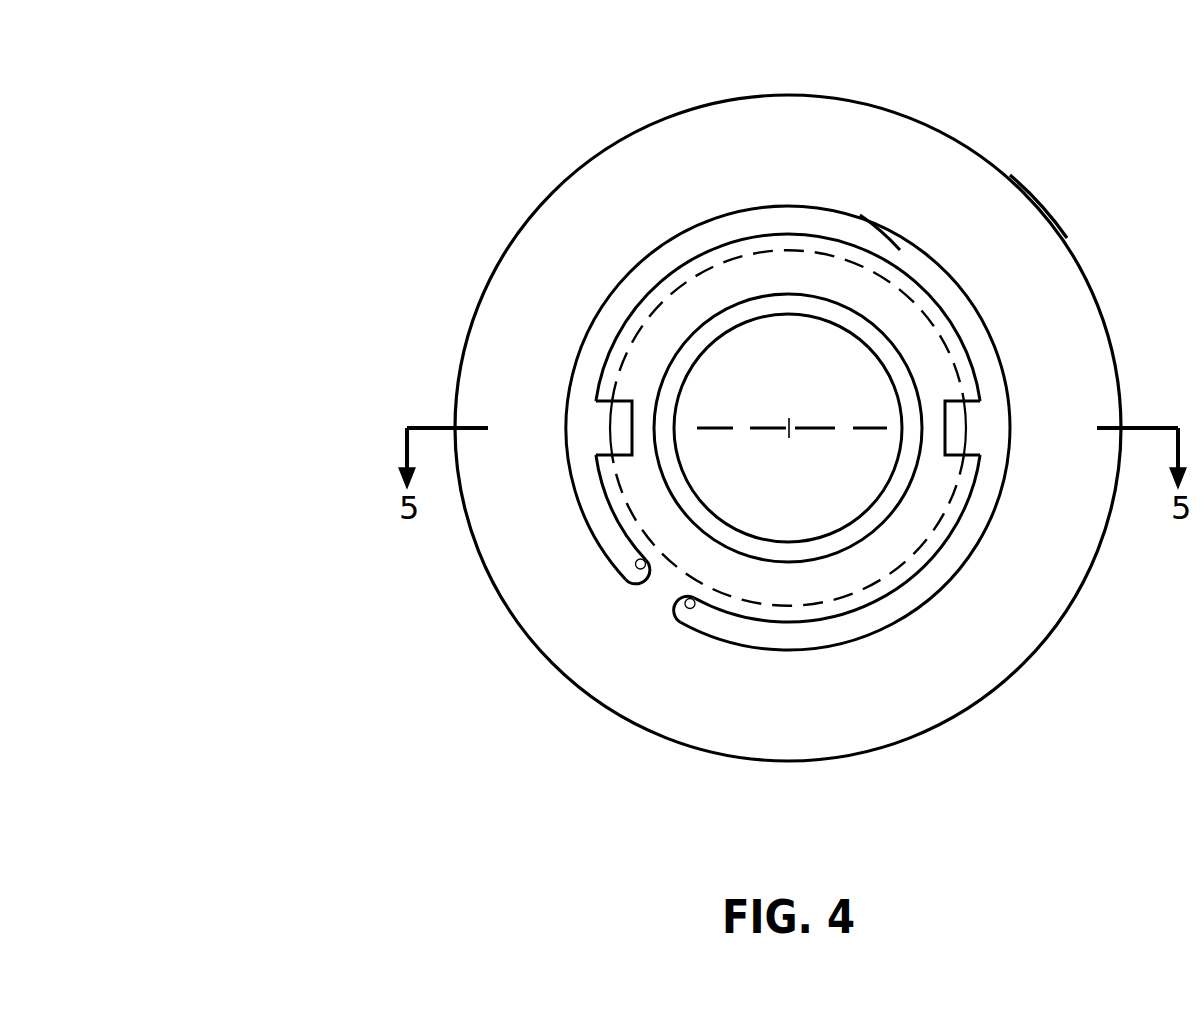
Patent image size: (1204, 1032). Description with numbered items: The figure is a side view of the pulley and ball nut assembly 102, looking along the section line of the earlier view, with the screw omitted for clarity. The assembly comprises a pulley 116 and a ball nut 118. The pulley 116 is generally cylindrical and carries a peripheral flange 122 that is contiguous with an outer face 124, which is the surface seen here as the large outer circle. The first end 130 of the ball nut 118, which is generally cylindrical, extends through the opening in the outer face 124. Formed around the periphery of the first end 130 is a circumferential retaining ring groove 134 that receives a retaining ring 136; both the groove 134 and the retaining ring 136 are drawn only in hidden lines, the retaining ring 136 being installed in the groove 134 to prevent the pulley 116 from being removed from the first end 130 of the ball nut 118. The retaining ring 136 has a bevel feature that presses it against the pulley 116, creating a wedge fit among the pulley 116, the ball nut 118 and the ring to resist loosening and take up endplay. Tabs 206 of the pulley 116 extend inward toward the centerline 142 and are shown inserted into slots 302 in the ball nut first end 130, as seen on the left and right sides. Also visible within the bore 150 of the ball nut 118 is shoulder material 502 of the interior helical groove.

The pulley and ball nut assembly 102 is at (207, 46).
The pulley 116 is at (512, 216).
The ball nut 118 is at (920, 268).
The peripheral flange 122 is at (1067, 238).
The outer face 124 is at (806, 162).
The first end 130 is at (857, 610).
The retaining ring groove 134 is at (665, 568).
The retaining ring 136 is at (615, 565).
The centerline 142 is at (792, 426).
The bore 150 is at (875, 535).
The tabs 206 is at (636, 431).
The slots 302 is at (597, 457).
The shoulder material 502 is at (735, 528).